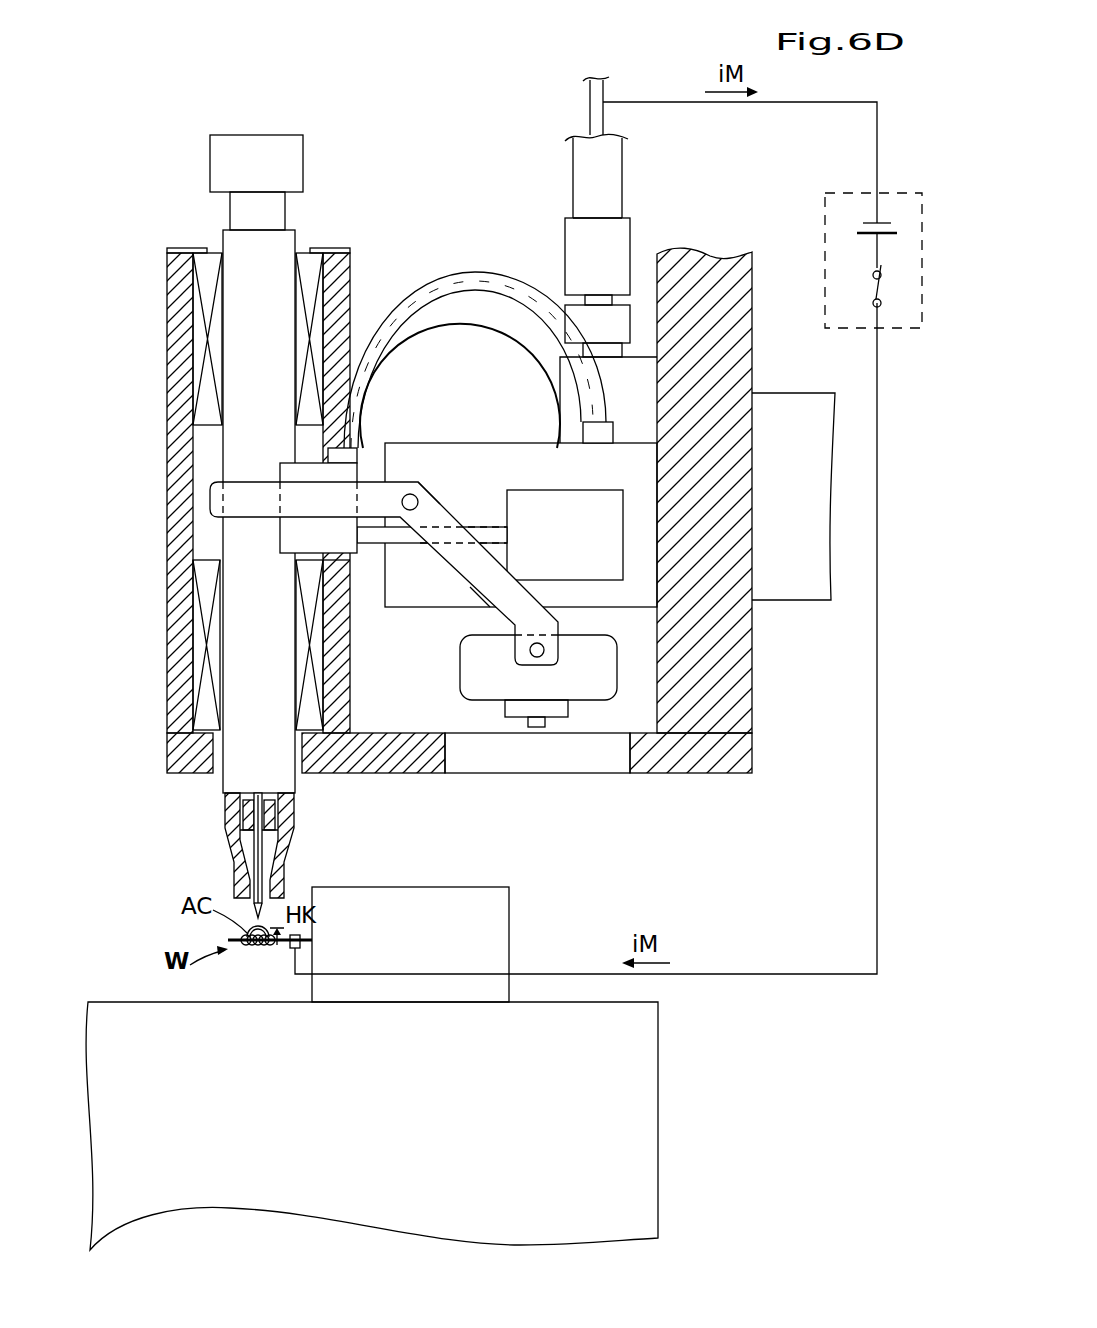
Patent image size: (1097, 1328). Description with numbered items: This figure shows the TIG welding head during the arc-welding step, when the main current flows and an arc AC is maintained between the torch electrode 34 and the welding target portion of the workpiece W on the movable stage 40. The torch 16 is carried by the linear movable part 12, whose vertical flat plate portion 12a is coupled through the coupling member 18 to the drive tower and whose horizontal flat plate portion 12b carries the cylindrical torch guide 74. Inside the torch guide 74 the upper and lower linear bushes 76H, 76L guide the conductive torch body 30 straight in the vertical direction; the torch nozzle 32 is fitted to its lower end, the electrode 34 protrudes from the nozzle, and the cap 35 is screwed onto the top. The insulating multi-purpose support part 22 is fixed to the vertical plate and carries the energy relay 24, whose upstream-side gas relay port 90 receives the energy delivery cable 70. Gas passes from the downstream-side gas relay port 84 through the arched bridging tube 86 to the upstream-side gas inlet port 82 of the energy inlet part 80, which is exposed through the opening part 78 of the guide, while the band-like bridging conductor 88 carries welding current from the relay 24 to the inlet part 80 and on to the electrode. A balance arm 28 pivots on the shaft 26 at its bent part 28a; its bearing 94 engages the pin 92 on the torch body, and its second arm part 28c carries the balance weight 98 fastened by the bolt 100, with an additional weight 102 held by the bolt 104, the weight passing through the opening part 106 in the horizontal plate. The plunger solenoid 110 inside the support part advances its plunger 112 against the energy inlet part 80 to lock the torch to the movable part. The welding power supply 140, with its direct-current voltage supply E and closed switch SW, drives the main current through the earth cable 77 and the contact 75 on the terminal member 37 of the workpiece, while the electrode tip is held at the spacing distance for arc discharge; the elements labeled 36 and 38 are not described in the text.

The linear movable part 12 is at (683, 779).
The vertical flat plate portion 12a is at (752, 338).
The horizontal flat plate portion 12b is at (346, 774).
The torch 16 is at (163, 208).
The coupling member 18 is at (796, 600).
The multi-purpose support part 22 is at (520, 443).
The energy relay 24 is at (560, 379).
The shaft 26 is at (413, 493).
The balance arm 28 is at (447, 507).
The bent part 28a is at (436, 500).
The second arm part 28c is at (476, 598).
The torch body 30 is at (276, 241).
The torch nozzle 32 is at (232, 866).
The torch electrode 34 is at (271, 879).
The cap 35 is at (262, 135).
The controller 36 is at (480, 887).
The terminal member 37 is at (228, 940).
The coil 38 is at (250, 948).
The movable stage 40 is at (659, 1113).
The energy delivery cable 70 is at (622, 171).
The torch guide 74 is at (167, 481).
The contact 75 is at (300, 945).
The linear bush 76H is at (208, 322).
The linear bush 76L is at (196, 645).
The earth cable 77 is at (762, 973).
The opening part 78 is at (346, 557).
The energy inlet part 80 is at (285, 463).
The upstream-side gas inlet port 82 is at (350, 446).
The downstream-side gas relay port 84 is at (605, 422).
The bridging tube 86 is at (467, 272).
The bridging conductor 88 is at (458, 322).
The upstream-side gas relay port 90 is at (572, 312).
The pin 92 is at (630, 231).
The bearing 94 is at (253, 491).
The balance weight 98 is at (460, 662).
The bolt 100 is at (543, 652).
The weight 102 is at (568, 708).
The bolt 104 is at (537, 728).
The opening part 106 is at (452, 774).
The plunger solenoid 110 is at (553, 490).
The plunger 112 is at (409, 545).
The welding power supply 140 is at (843, 193).
The direct-current voltage supply E is at (855, 232).
The switch SW is at (858, 290).